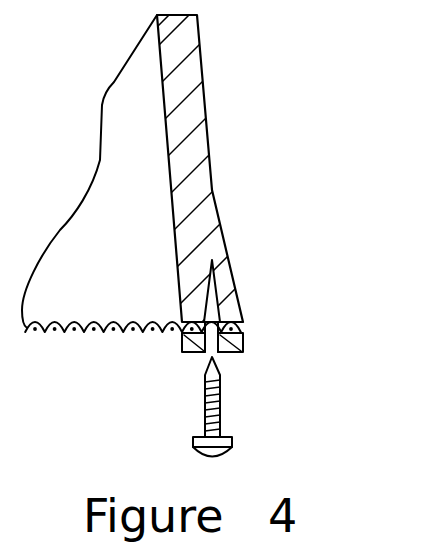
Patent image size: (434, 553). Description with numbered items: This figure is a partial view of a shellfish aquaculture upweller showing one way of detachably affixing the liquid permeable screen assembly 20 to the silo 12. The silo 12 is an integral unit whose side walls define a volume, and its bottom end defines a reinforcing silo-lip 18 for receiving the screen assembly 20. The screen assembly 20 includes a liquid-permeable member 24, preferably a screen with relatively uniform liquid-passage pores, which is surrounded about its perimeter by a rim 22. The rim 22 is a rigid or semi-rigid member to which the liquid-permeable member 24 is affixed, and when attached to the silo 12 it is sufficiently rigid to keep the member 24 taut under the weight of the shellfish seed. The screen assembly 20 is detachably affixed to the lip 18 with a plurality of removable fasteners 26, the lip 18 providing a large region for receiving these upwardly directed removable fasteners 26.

The silo 12 is at (205, 120).
The reinforcing silo-lip 18 is at (237, 303).
The screen assembly 20 is at (160, 352).
The rim 22 is at (243, 350).
The liquid-permeable member 24 is at (127, 323).
The removable fasteners 26 is at (205, 408).